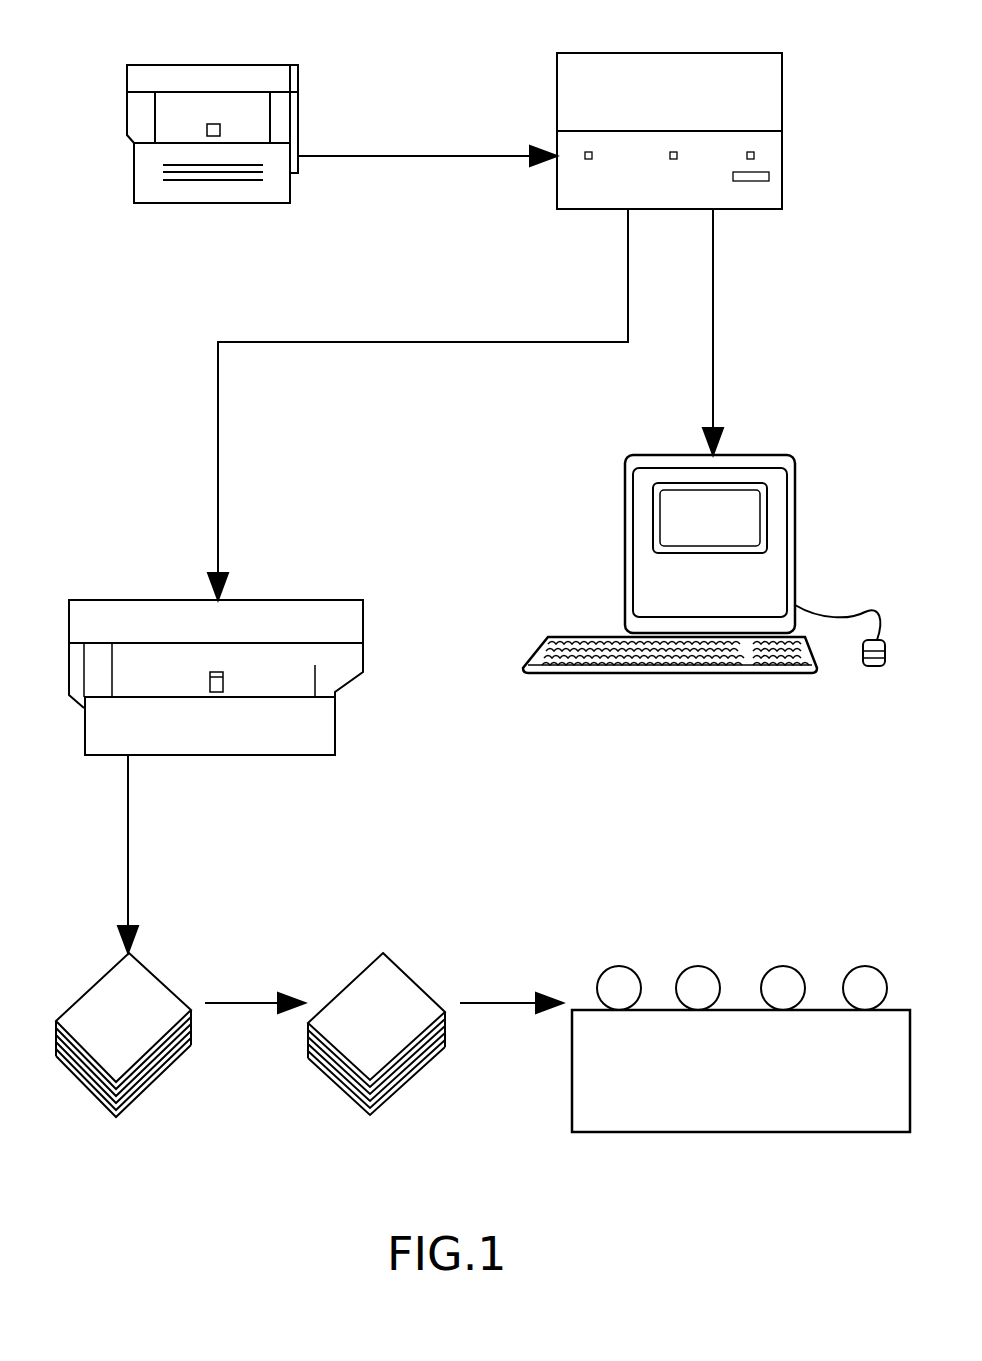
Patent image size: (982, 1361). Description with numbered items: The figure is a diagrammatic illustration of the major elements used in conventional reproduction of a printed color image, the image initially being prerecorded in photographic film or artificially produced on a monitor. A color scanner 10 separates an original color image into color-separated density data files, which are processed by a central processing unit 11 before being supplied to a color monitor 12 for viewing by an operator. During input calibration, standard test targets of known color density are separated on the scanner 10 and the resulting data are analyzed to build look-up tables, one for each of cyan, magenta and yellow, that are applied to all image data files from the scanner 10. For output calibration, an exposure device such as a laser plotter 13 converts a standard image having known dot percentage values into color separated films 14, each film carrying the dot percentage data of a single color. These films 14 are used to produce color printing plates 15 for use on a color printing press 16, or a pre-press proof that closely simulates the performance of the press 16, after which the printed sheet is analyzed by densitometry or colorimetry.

The color scanner 10 is at (223, 63).
The central processing unit 11 is at (677, 52).
The color monitor 12 is at (727, 531).
The laser plotter 13 is at (138, 598).
The color separated films 14 is at (97, 980).
The color printing plates 15 is at (360, 975).
The color printing press 16 is at (749, 1084).